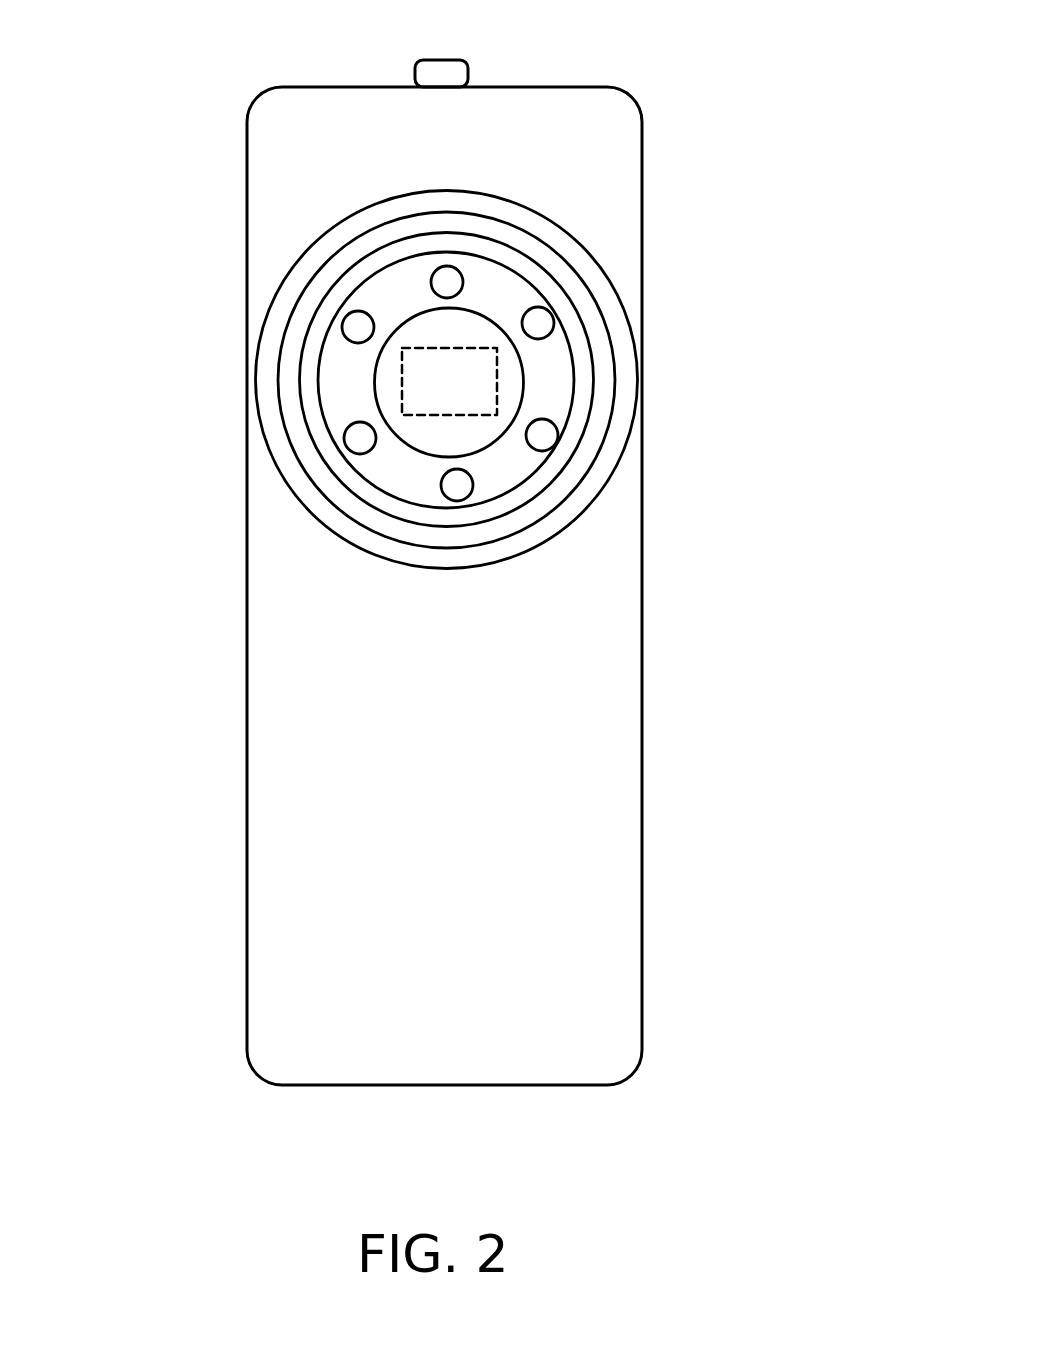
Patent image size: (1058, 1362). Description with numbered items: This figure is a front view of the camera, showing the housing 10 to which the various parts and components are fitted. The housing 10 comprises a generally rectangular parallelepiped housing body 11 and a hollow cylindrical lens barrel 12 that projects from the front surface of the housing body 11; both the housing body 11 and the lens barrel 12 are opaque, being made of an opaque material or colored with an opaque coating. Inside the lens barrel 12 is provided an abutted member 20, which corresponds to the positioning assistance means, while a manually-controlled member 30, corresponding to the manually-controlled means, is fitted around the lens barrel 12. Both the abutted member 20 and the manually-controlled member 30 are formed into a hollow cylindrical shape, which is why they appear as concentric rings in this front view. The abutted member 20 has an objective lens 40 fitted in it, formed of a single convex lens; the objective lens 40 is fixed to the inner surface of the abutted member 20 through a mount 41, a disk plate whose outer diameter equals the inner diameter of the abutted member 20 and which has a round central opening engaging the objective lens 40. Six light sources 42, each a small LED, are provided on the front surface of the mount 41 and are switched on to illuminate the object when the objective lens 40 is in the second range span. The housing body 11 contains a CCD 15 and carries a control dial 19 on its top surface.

The housing 10 is at (468, 542).
The housing body 11 is at (633, 820).
The lens barrel 12 is at (328, 276).
The CCD 15 is at (467, 362).
The control dial 19 is at (455, 63).
The abutted member 20 is at (313, 337).
The manually-controlled member 30 is at (598, 478).
The objective lens 40 is at (469, 403).
The mount 41 is at (475, 403).
The light sources 42 is at (353, 443).